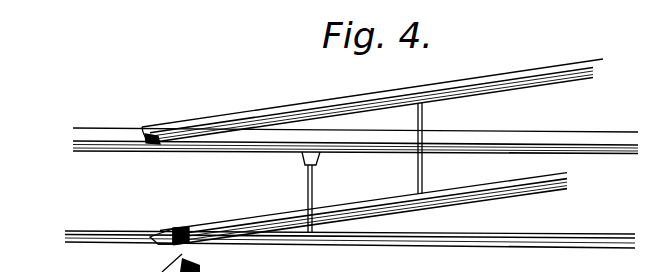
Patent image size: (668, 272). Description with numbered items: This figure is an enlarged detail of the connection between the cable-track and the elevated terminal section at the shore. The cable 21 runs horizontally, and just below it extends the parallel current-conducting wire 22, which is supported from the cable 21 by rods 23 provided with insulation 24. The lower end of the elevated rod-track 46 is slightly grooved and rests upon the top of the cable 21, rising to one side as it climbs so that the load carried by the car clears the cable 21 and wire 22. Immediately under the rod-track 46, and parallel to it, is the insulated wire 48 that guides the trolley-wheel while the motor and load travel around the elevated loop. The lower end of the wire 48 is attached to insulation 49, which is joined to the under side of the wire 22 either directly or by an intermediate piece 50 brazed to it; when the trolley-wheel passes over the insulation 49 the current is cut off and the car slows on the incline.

The cable 21 is at (115, 115).
The current-conducting wire 22 is at (118, 223).
The rods 23 is at (305, 192).
The insulation 24 is at (302, 160).
The rod-track 46 is at (334, 100).
The insulated wire 48 is at (365, 207).
The insulation 49 is at (185, 228).
The intermediate piece 50 is at (157, 245).